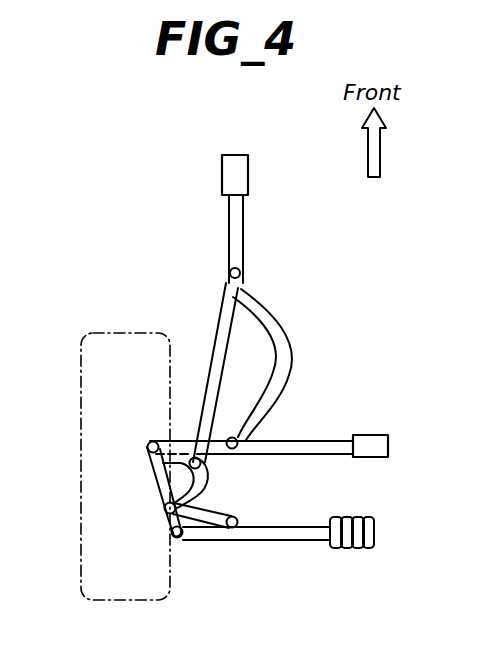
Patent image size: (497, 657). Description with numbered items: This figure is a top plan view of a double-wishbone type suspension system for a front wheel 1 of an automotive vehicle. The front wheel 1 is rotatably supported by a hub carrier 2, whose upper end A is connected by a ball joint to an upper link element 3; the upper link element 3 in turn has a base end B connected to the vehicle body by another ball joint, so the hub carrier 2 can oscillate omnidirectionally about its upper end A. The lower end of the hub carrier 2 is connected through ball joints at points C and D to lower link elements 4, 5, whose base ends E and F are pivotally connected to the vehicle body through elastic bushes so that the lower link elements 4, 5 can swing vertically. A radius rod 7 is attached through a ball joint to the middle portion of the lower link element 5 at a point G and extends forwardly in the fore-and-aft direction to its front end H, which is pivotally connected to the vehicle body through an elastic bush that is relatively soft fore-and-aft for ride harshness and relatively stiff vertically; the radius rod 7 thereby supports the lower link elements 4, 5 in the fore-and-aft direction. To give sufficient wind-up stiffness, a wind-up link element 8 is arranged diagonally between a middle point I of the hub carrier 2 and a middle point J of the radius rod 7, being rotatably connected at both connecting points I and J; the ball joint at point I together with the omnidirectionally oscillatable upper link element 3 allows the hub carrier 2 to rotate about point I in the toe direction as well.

The front wheel 1 is at (80, 437).
The hub carrier 2 is at (166, 504).
The upper link element 3 is at (219, 510).
The lower link element 4 is at (292, 541).
The lower link element 5 is at (308, 440).
The radius rod 7 is at (243, 223).
The wind-up link element 8 is at (220, 320).
The upper end A is at (167, 512).
The base end B is at (242, 512).
The connecting point C is at (179, 538).
The connecting point D is at (150, 442).
The base end E is at (375, 528).
The base end F is at (388, 446).
The connecting point G is at (226, 436).
The front end H is at (248, 172).
The middle point I is at (165, 470).
The middle point J is at (241, 273).